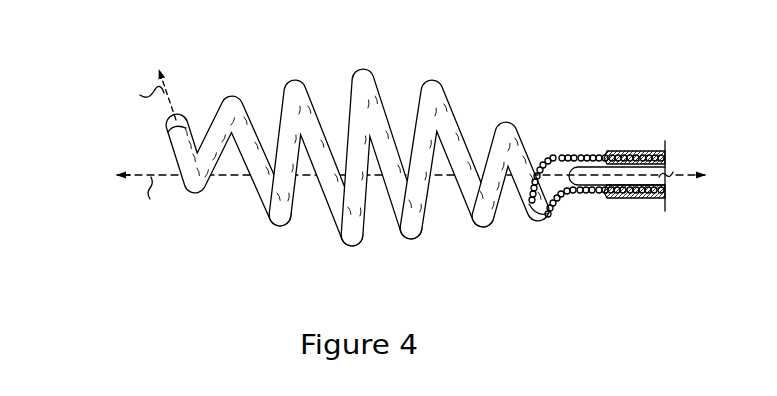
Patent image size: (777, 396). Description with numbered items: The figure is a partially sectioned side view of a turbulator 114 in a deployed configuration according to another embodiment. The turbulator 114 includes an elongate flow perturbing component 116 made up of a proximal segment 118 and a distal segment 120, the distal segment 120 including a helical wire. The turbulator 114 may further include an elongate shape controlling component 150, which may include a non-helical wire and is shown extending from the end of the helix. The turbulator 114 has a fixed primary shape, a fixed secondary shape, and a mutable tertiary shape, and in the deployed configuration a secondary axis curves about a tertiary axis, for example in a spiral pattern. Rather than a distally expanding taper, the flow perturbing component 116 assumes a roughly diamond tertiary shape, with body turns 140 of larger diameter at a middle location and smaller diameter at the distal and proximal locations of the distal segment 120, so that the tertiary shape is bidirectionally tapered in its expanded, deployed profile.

The turbulator 114 is at (67, 97).
The elongate flow perturbing component 116 is at (280, 233).
The proximal segment 118 is at (619, 148).
The distal segment 120 is at (355, 252).
The body turns 140 is at (430, 76).
The elongate shape controlling component 150 is at (594, 182).